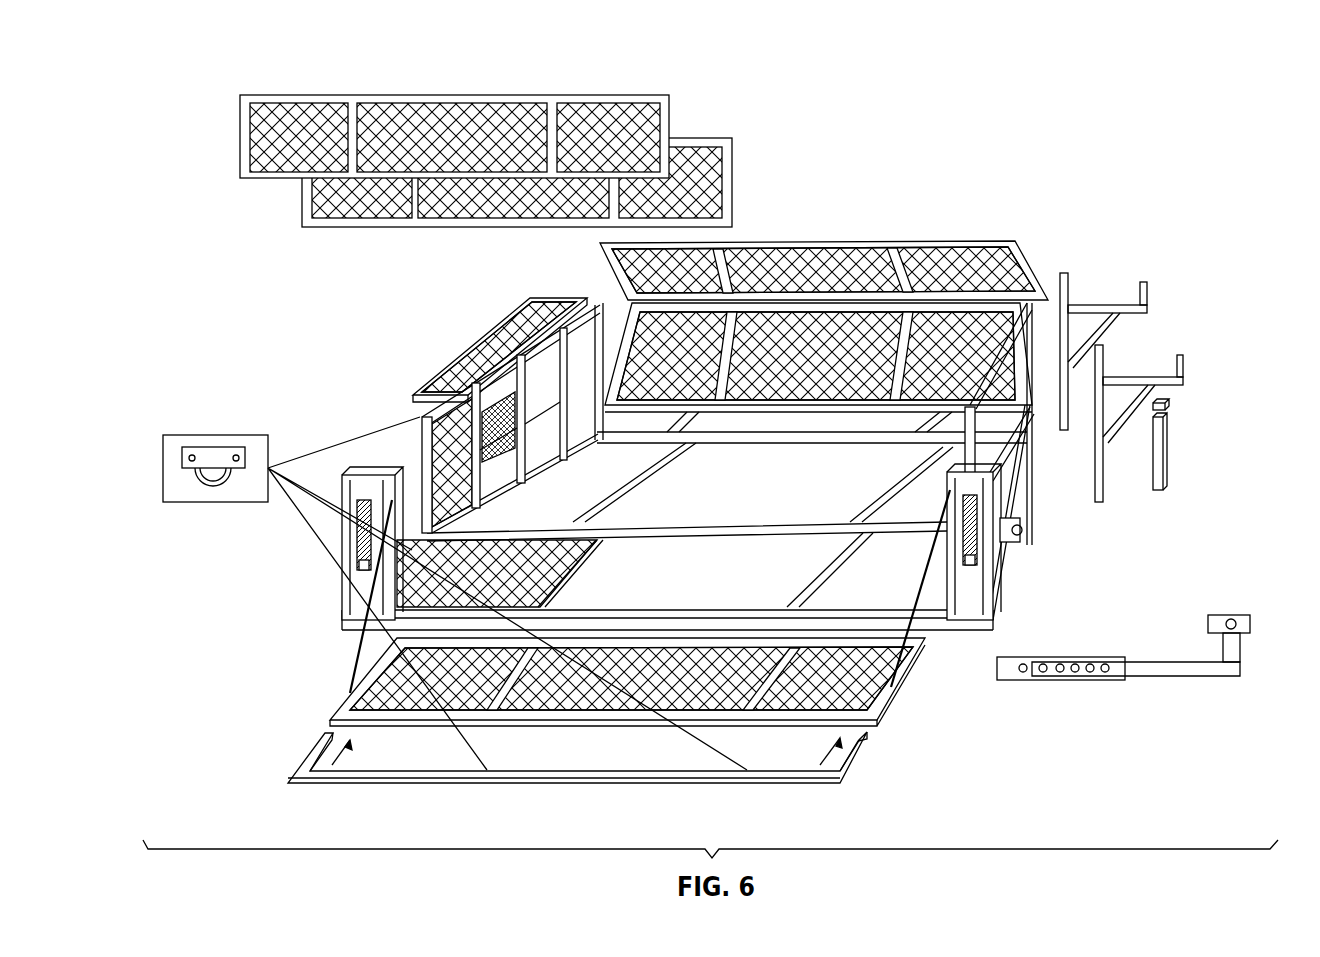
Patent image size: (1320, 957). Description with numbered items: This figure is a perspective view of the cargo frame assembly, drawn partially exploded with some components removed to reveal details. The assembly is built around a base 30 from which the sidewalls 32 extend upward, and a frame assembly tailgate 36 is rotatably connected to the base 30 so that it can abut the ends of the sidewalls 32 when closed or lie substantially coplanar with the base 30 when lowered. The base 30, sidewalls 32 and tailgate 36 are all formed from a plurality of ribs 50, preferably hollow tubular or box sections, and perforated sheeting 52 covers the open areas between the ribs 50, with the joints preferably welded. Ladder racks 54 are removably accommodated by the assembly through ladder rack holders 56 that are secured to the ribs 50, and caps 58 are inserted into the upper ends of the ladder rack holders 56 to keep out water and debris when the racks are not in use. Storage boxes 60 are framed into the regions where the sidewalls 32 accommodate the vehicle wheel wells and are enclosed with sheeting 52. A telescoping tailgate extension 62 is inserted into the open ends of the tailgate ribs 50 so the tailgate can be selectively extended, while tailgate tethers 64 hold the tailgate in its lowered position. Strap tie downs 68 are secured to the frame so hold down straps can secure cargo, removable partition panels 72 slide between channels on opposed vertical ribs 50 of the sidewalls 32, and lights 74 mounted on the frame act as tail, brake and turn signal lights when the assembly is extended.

The base 30 is at (966, 646).
The sidewalls 32 is at (393, 440).
The frame assembly tailgate 36 is at (598, 698).
The ribs 50 is at (895, 262).
The perforated sheeting 52 is at (940, 318).
The ladder racks 54 is at (1182, 360).
The ladder rack holders 56 is at (1160, 460).
The caps 58 is at (1167, 404).
The storage boxes 60 is at (564, 278).
The telescoping tailgate extension 62 is at (397, 778).
The tailgate tethers 64 is at (357, 643).
The strap tie downs 68 is at (210, 452).
The partition panels 72 is at (590, 200).
The lights 74 is at (357, 548).